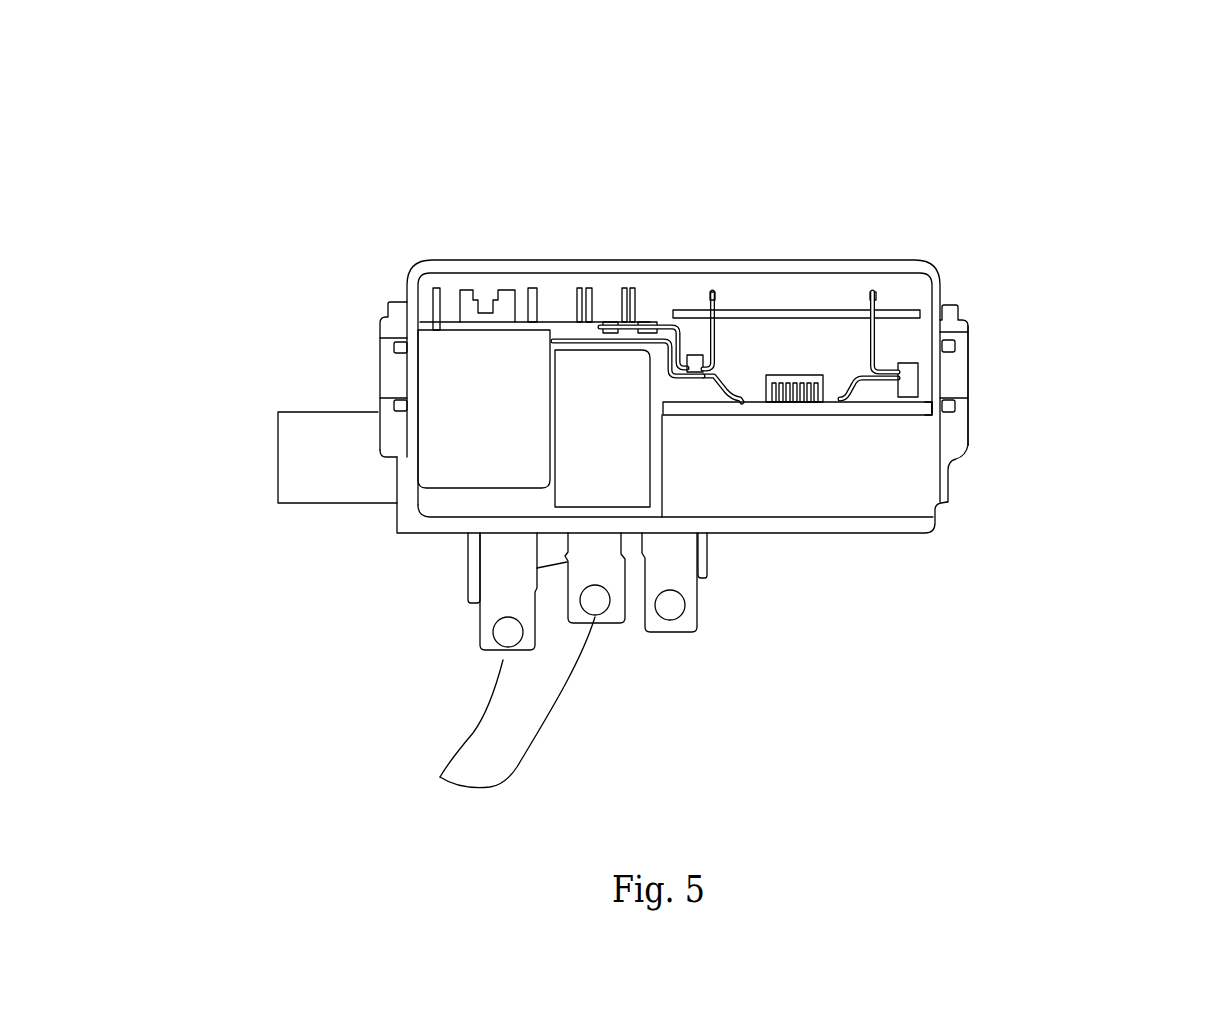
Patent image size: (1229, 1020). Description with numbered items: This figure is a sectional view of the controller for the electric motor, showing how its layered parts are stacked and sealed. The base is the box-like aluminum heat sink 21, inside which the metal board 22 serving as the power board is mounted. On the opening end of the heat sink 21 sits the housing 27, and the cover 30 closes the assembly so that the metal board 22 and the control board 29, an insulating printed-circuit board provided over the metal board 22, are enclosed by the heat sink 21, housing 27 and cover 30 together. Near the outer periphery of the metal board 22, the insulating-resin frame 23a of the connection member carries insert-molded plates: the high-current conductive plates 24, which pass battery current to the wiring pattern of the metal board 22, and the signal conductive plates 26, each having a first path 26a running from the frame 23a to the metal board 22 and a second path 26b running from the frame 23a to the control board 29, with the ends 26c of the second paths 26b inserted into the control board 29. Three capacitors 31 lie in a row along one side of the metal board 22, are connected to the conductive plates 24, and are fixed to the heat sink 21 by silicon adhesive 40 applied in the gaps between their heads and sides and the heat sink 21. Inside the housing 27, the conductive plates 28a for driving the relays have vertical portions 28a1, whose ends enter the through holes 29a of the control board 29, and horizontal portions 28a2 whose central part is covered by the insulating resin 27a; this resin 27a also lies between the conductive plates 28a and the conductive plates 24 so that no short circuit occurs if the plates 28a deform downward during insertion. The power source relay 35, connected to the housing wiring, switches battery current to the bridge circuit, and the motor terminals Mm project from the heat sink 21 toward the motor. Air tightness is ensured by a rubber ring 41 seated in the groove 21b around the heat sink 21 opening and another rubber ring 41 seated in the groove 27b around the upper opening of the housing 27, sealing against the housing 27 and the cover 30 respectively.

The heat sink 21 is at (880, 473).
The groove 21b is at (966, 445).
The metal board 22 is at (805, 408).
The frame 23a is at (933, 412).
The conductive plates 24 is at (680, 375).
The signal conductive plates 26 is at (935, 325).
The first path 26a is at (955, 413).
The second path 26b is at (968, 328).
The ends 26c is at (880, 298).
The housing 27 is at (380, 382).
The insulating resin 27a is at (694, 355).
The groove 27b is at (380, 360).
The conductive plates 28a is at (718, 350).
The vertical portion 28a1 is at (727, 352).
The horizontal portion 28a2 is at (703, 372).
The control board 29 is at (787, 312).
The through holes 29a is at (716, 318).
The cover 30 is at (850, 260).
The capacitors 31 is at (573, 455).
The power source relay 35 is at (487, 415).
The silicon adhesive 40 is at (648, 630).
The rubber ring 41 is at (380, 328).
The motor terminals Mm is at (496, 702).